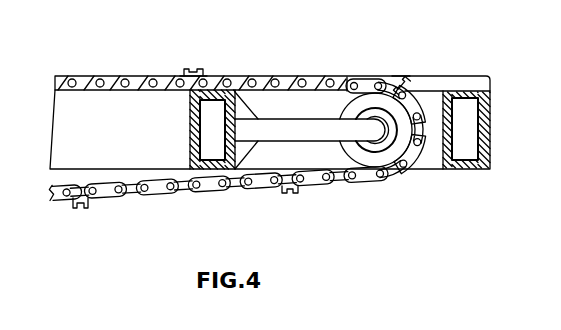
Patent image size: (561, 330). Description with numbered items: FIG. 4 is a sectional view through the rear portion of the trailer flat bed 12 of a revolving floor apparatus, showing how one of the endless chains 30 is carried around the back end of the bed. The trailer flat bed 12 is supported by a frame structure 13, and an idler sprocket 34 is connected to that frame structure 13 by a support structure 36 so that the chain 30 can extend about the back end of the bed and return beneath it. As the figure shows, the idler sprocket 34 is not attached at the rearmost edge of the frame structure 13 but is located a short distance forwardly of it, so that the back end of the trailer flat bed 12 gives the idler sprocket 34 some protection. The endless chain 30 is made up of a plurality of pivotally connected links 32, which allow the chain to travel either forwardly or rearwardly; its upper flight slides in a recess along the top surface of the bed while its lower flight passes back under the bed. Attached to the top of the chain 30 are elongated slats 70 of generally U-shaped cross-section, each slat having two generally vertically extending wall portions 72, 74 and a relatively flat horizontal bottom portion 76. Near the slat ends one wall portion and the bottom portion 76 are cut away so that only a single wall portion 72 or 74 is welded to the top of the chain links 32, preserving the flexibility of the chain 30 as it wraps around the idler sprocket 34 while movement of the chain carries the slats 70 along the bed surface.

The trailer flat bed 12 is at (270, 105).
The frame structure 13 is at (229, 93).
The endless chain 30 is at (176, 192).
The chain links 32 is at (237, 157).
The idler sprocket 34 is at (405, 153).
The support structure 36 is at (293, 128).
The slat 70 is at (231, 125).
The wall portion 72 is at (184, 71).
The wall portion 74 is at (203, 72).
The bottom portion 76 is at (78, 210).